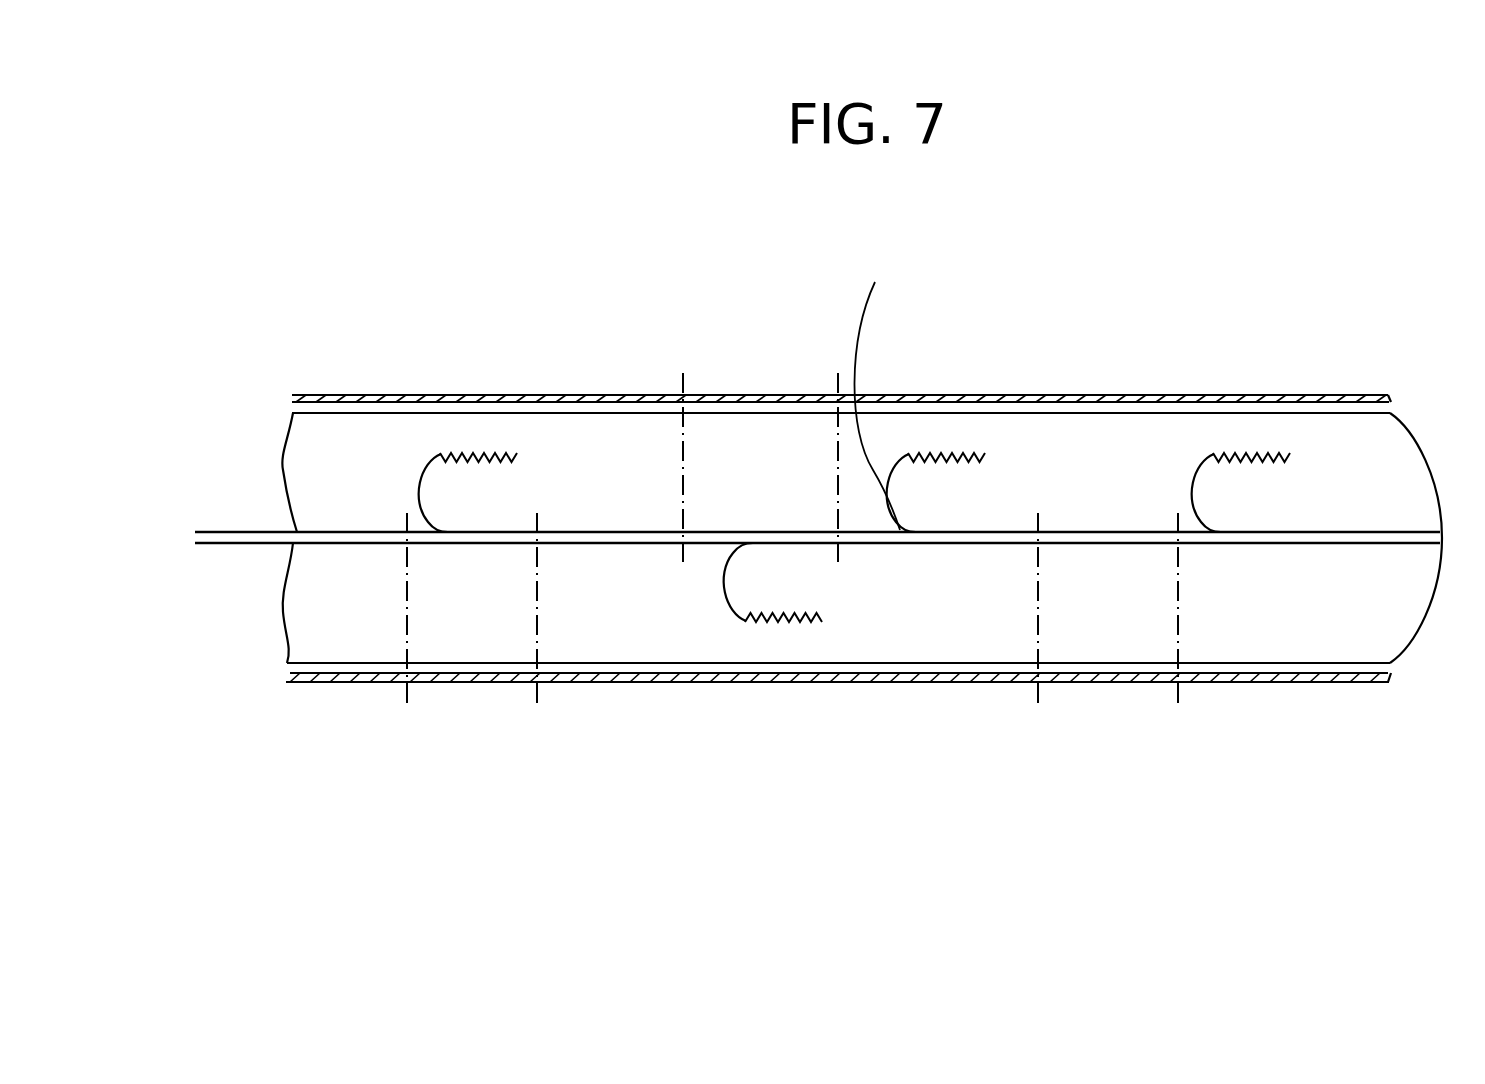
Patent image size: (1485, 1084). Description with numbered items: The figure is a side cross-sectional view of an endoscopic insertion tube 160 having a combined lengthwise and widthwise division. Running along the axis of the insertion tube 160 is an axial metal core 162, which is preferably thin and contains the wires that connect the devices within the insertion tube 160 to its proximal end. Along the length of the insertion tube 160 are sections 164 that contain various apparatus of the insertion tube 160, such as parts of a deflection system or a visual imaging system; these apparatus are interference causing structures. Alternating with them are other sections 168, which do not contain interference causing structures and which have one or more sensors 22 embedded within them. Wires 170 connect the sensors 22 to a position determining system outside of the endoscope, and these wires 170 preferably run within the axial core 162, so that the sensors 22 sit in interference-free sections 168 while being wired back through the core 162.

The endoscopic insertion tube 160 is at (401, 321).
The axial metal core 162 is at (227, 531).
The sections containing apparatus 164 is at (453, 637).
The sections without interference causing structures 168 is at (323, 637).
The sensors 22 is at (470, 455).
The wires 170 is at (875, 387).